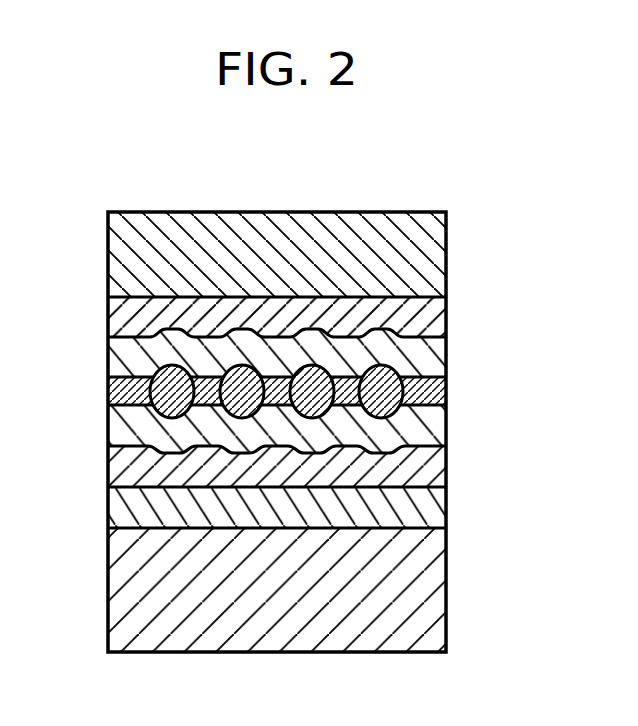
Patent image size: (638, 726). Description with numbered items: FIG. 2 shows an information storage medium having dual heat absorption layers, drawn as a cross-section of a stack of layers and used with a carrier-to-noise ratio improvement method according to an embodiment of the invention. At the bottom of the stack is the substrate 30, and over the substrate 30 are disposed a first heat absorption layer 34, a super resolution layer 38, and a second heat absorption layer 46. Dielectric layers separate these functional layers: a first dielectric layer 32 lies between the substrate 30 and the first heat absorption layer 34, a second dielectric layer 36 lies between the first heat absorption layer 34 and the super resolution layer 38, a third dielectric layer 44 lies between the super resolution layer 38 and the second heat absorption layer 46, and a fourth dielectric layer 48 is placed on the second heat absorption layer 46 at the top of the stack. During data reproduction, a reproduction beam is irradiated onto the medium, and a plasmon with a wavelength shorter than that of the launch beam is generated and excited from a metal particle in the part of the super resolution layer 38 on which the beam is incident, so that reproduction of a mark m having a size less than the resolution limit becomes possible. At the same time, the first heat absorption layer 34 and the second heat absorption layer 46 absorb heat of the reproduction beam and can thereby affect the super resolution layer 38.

The substrate 30 is at (430, 587).
The first dielectric layer 32 is at (428, 508).
The first heat absorption layer 34 is at (430, 470).
The second dielectric layer 36 is at (430, 430).
The super resolution layer 38 is at (420, 395).
The third dielectric layer 44 is at (425, 355).
The second heat absorption layer 46 is at (427, 317).
The fourth dielectric layer 48 is at (422, 256).
The mark m is at (150, 358).